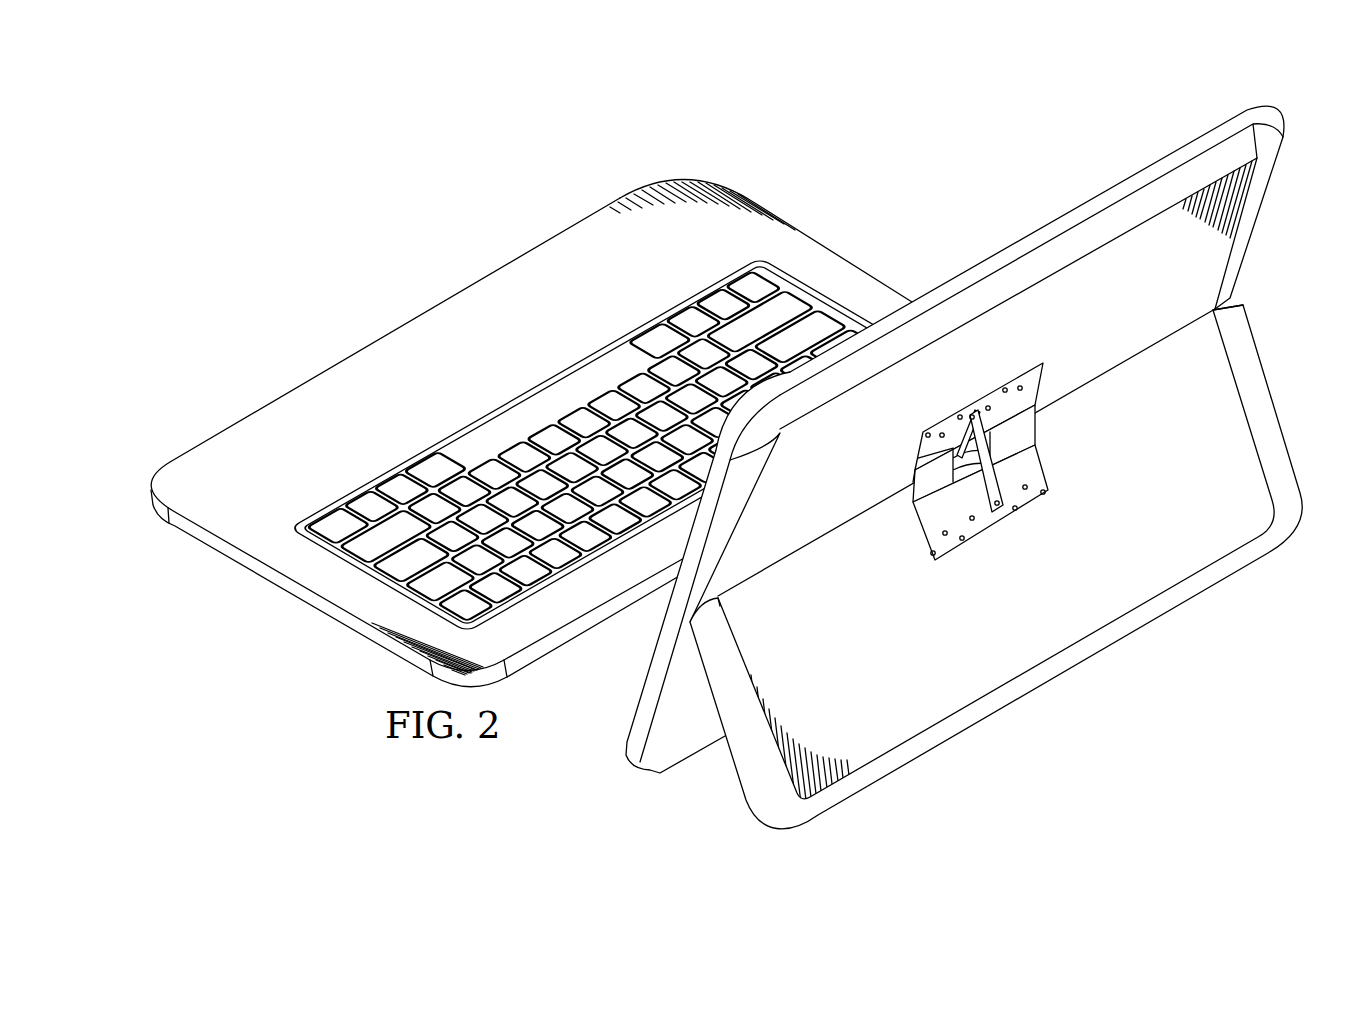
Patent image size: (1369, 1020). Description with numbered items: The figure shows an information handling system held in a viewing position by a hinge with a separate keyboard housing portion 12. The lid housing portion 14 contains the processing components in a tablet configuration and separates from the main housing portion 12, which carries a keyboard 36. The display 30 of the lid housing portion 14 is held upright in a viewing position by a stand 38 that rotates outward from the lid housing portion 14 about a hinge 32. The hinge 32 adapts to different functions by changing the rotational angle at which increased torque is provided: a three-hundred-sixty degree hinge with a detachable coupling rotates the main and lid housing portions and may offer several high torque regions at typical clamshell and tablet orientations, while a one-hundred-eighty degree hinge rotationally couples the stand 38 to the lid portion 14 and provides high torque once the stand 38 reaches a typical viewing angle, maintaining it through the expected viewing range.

The keyboard housing portion 12 is at (401, 309).
The lid housing portion 14 is at (977, 439).
The display 30 is at (1008, 244).
The hinge 32 is at (1035, 427).
The keyboard 36 is at (522, 419).
The stand 38 is at (1153, 608).